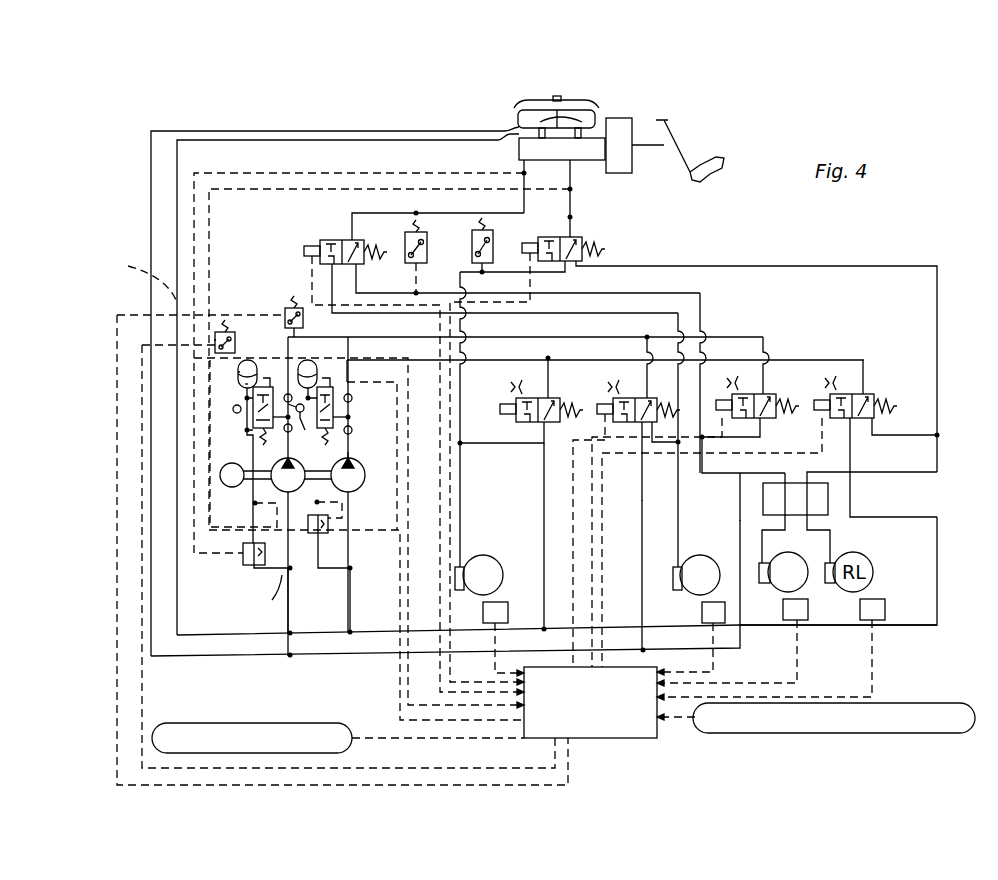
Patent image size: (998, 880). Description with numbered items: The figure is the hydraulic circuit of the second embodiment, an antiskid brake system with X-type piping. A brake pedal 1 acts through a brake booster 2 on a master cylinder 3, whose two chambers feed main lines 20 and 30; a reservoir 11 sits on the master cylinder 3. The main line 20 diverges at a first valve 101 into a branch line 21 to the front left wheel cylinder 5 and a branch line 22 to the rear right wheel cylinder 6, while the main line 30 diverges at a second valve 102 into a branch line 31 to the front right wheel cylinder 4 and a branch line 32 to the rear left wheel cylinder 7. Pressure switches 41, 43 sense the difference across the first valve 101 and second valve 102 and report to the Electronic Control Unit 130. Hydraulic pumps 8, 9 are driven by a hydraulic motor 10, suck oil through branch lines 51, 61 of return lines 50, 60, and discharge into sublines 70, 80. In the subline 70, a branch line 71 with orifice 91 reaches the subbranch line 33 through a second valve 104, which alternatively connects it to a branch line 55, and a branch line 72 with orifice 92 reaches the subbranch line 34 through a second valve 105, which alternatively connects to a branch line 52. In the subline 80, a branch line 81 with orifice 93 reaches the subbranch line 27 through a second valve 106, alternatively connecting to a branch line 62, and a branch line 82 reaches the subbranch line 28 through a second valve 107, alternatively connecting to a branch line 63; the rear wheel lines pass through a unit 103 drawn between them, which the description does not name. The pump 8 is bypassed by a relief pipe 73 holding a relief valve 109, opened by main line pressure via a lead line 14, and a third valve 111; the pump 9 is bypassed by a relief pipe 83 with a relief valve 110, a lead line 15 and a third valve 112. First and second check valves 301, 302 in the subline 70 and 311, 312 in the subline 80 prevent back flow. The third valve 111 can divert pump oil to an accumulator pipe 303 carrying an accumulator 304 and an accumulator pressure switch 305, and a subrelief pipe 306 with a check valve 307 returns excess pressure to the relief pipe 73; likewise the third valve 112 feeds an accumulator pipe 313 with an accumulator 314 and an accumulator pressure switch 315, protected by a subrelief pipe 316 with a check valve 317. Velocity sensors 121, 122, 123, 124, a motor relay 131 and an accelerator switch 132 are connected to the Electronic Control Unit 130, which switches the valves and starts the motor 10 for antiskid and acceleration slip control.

The brake pedal 1 is at (690, 179).
The brake booster 2 is at (632, 165).
The master cylinder 3 is at (590, 160).
The wheel cylinder 4 is at (461, 592).
The wheel cylinder 5 is at (677, 590).
The wheel cylinder 6 is at (764, 584).
The wheel cylinder 7 is at (812, 535).
The hydraulic pump 8 is at (365, 488).
The hydraulic pump 9 is at (287, 557).
The hydraulic motor 10 is at (228, 488).
The reservoir 11 is at (597, 110).
The lead line 14 is at (140, 277).
The lead line 15 is at (206, 272).
The main line 20 is at (524, 200).
The branch line 21 is at (407, 318).
The branch line 22 is at (399, 293).
The subbranch line 27 is at (669, 453).
The subbranch line 28 is at (720, 468).
The main line 30 is at (570, 202).
The branch line 31 is at (516, 273).
The branch line 32 is at (707, 265).
The subbranch line 33 is at (466, 440).
The subbranch line 34 is at (890, 435).
The pressure switch 41 is at (428, 232).
The pressure switch 43 is at (494, 234).
The return line 50 is at (347, 146).
The branch line 51 is at (356, 600).
The branch line 52 is at (940, 545).
The branch line 55 is at (539, 518).
The return line 60 is at (362, 131).
The branch line 61 is at (308, 602).
The branch line 62 is at (636, 542).
The branch line 63 is at (730, 522).
The subline 70 is at (415, 372).
The branch line 71 is at (550, 380).
The branch line 72 is at (866, 355).
The relief pipe 73 is at (344, 452).
The subline 80 is at (314, 337).
The branch line 81 is at (637, 372).
The branch line 82 is at (724, 373).
The relief pipe 83 is at (242, 458).
The orifice 91 is at (511, 384).
The orifice 92 is at (822, 371).
The orifice 93 is at (614, 386).
The first valve 101 is at (344, 238).
The second valve 102 is at (583, 243).
The proportioning valve 103 is at (828, 505).
The second valve 104 is at (548, 405).
The second valve 105 is at (877, 388).
The second valve 106 is at (664, 405).
The second valve 107 is at (772, 396).
The relief valve 109 is at (312, 561).
The relief valve 110 is at (254, 568).
The third valve 111 is at (348, 358).
The third valve 112 is at (245, 384).
The velocity sensor 121 is at (508, 598).
The velocity sensor 122 is at (703, 628).
The velocity sensor 123 is at (809, 610).
The velocity sensor 124 is at (882, 596).
The Electronic Control Unit 130 is at (660, 738).
The motor relay 131 is at (209, 722).
The accelerator switch 132 is at (940, 703).
The first check valve 301 is at (350, 378).
The second check valve 302 is at (351, 433).
The accumulator pipe 303 is at (352, 402).
The accumulator 304 is at (248, 333).
The accumulator pressure switch 305 is at (289, 307).
The subrelief pipe 306 is at (278, 596).
The check valve 307 is at (296, 412).
The first check valve 311 is at (261, 367).
The second check valve 312 is at (312, 432).
The accumulator pipe 313 is at (240, 405).
The accumulator 314 is at (238, 372).
The accumulator pressure switch 315 is at (214, 340).
The subrelief pipe 316 is at (250, 425).
The check valve 317 is at (233, 412).